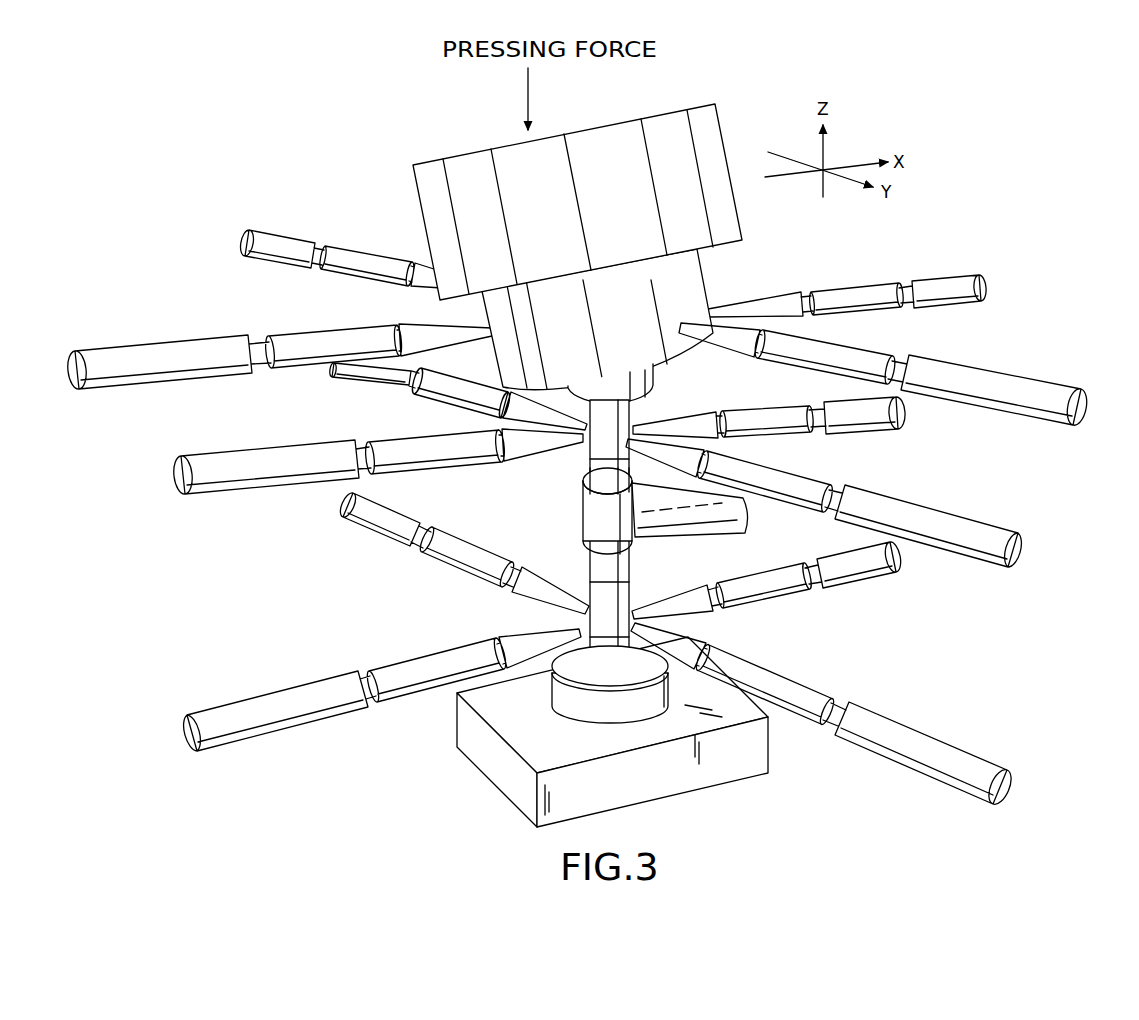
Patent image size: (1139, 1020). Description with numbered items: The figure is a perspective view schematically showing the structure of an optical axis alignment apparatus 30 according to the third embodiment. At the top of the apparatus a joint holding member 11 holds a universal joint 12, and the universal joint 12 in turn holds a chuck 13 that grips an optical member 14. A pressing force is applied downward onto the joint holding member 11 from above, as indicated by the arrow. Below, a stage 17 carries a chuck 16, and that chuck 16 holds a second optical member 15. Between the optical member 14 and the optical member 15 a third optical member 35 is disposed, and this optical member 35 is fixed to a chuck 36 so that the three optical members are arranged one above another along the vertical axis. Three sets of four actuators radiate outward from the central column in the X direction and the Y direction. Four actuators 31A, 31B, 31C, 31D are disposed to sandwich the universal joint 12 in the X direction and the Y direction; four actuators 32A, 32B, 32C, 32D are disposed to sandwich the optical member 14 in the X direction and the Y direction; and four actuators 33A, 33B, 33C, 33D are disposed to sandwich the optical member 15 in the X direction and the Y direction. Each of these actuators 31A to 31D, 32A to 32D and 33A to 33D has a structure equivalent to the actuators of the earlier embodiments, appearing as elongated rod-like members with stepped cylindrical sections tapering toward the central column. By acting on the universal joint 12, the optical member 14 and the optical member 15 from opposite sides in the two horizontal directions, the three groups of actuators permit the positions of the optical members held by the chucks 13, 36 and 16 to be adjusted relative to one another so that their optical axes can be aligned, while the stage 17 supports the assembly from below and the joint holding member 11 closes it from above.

The optical axis alignment apparatus 30 is at (376, 155).
The joint holding member 11 is at (445, 213).
The universal joint 12 is at (695, 273).
The chuck 13 is at (655, 380).
The optical member 14 is at (593, 447).
The optical member 15 is at (580, 623).
The chuck 16 is at (570, 712).
The stage 17 is at (512, 785).
The optical member 35 is at (592, 560).
The chuck 36 is at (683, 515).
The actuator 31A is at (945, 272).
The actuator 31B is at (130, 338).
The actuator 31C is at (1005, 358).
The actuator 31D is at (290, 225).
The actuator 32A is at (900, 430).
The actuator 32B is at (222, 505).
The actuator 32C is at (1000, 572).
The actuator 32D is at (345, 367).
The actuator 33A is at (800, 600).
The actuator 33B is at (285, 740).
The actuator 33C is at (933, 730).
The actuator 33D is at (390, 560).